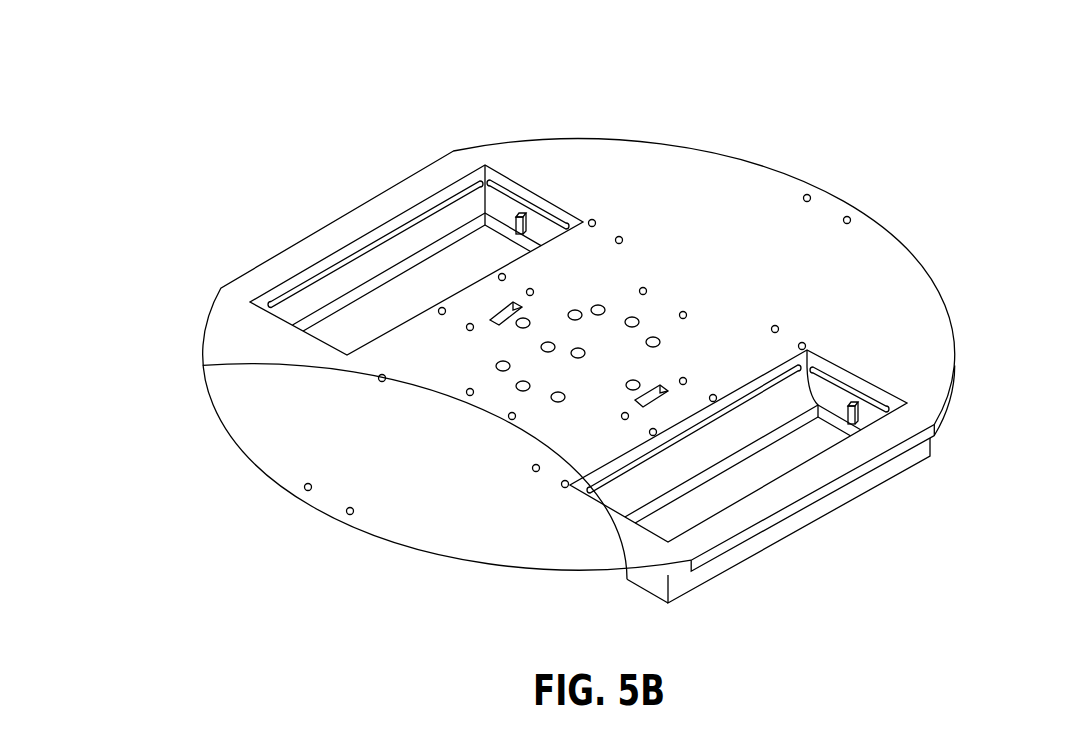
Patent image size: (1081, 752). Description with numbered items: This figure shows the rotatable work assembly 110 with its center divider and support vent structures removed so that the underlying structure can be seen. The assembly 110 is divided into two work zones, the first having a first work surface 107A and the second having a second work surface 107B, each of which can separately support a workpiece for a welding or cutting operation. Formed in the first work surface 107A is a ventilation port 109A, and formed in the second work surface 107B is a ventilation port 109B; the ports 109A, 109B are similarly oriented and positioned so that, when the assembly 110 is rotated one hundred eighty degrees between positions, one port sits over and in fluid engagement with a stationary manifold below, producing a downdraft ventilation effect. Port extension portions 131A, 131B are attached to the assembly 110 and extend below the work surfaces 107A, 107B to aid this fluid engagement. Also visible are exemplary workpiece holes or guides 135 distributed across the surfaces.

The assembly 110 is at (360, 198).
The first work surface 107A is at (635, 178).
The second work surface 107B is at (872, 248).
The port extension portion 131A is at (437, 230).
The port extension portion 131B is at (853, 403).
The ventilation port 109A is at (522, 183).
The ventilation port 109B is at (847, 367).
The workpiece holes or guides 135 is at (490, 317).